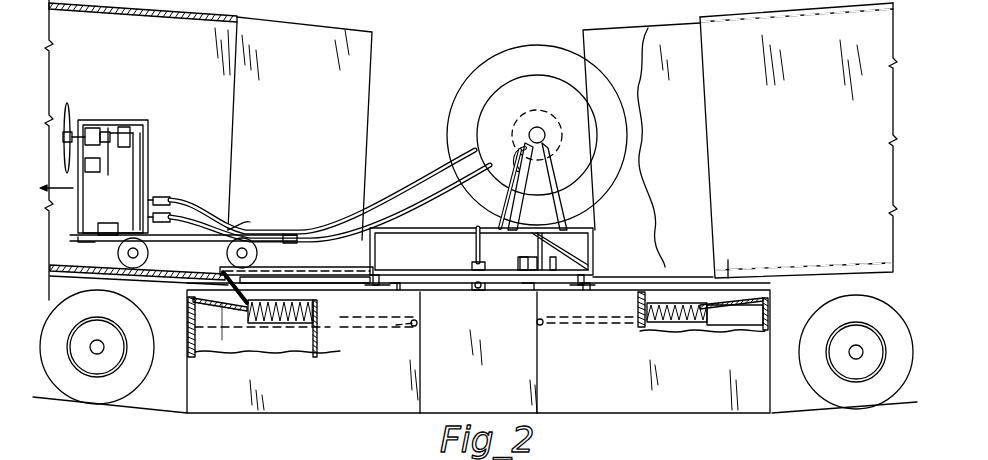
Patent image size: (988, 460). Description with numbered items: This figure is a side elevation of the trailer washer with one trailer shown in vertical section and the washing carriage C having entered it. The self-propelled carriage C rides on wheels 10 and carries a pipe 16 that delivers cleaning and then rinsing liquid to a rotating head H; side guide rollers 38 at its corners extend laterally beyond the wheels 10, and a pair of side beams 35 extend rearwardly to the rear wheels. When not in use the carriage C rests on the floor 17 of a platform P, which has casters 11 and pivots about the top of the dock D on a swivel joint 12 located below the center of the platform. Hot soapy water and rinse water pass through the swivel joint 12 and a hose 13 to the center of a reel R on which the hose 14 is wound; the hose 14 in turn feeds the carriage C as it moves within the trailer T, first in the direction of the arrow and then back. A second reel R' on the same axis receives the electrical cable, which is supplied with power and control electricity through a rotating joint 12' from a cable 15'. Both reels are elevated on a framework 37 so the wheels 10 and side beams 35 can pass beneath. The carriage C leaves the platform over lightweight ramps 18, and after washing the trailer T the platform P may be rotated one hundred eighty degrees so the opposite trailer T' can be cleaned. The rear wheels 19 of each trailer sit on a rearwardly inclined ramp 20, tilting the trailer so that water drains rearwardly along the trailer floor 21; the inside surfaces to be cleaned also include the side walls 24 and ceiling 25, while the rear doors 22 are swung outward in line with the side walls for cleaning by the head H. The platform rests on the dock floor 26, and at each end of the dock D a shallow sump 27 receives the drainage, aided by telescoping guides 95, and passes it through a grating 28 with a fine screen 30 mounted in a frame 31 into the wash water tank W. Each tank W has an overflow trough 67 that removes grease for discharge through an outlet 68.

The wheels 10 is at (224, 255).
The casters 11 is at (474, 289).
The swivel joint 12 is at (457, 250).
The rotating joint 12' is at (513, 125).
The hose 13 is at (470, 172).
The hose 14 is at (357, 218).
The cable 15' is at (548, 126).
The pipe 16 is at (137, 155).
The floor 17 is at (510, 248).
The ramps 18 is at (345, 265).
The rear wheels 19 is at (60, 323).
The ramp 20 is at (137, 403).
The floor 21 is at (68, 265).
The rear doors 22 is at (370, 68).
The side walls 24 is at (163, 80).
The ceiling 25 is at (110, 15).
The floor 26 is at (528, 287).
The sump 27 is at (202, 298).
The grating 28 is at (280, 302).
The fine screen 30 is at (312, 302).
The frame 31 is at (247, 305).
The side beams 35 is at (230, 230).
The framework 37 is at (422, 208).
The side guide rollers 38 is at (78, 237).
The overflow trough 67 is at (396, 325).
The outlet 68 is at (416, 326).
The telescoping guides 95 is at (222, 303).
The carriage C is at (148, 172).
The dock D is at (670, 416).
The rotating head H is at (76, 120).
The platform P is at (578, 228).
The reel R is at (537, 122).
The reel R' is at (508, 135).
The trailer T is at (137, 150).
The trailer T' is at (798, 140).
The wash water tank W is at (333, 333).